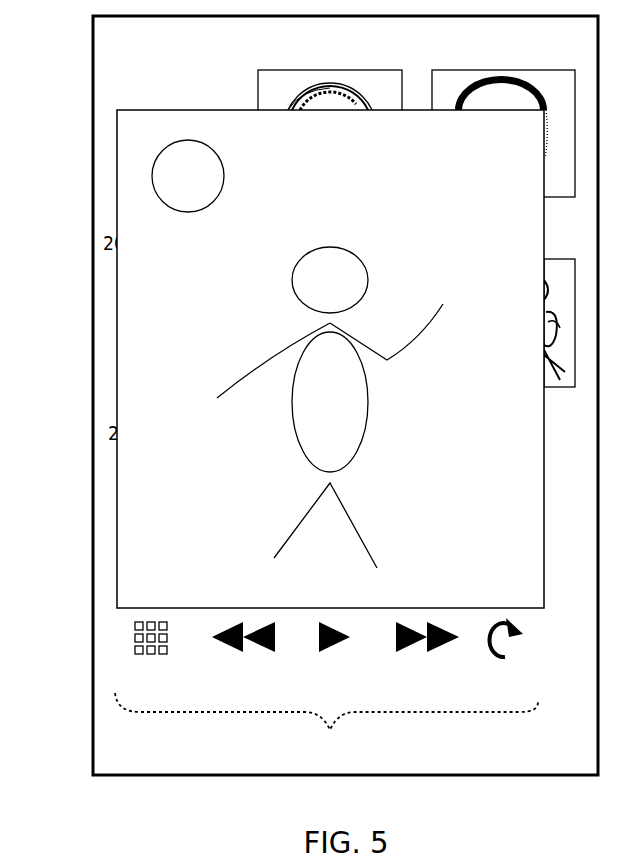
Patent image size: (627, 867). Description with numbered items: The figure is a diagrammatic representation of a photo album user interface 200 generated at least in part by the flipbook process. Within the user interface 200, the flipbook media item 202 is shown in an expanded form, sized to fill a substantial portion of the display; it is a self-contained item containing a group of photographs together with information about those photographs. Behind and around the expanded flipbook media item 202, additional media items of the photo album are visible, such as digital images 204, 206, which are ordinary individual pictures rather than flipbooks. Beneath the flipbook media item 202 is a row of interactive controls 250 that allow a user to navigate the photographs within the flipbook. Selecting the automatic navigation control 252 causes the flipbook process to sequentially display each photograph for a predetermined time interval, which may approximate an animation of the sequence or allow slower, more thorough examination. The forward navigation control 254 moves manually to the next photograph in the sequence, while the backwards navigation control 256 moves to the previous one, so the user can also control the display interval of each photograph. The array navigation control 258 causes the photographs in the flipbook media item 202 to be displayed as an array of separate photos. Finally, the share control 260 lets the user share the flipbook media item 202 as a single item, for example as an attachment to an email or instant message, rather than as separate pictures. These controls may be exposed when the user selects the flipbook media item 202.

The user interface 200 is at (86, 22).
The flipbook media item 202 is at (180, 110).
The digital image 204 is at (322, 70).
The digital image 206 is at (513, 70).
The interactive controls 250 is at (326, 725).
The automatic navigation control 252 is at (324, 660).
The forward navigation control 254 is at (425, 660).
The backwards navigation control 256 is at (243, 660).
The array navigation control 258 is at (148, 660).
The share control 260 is at (512, 660).